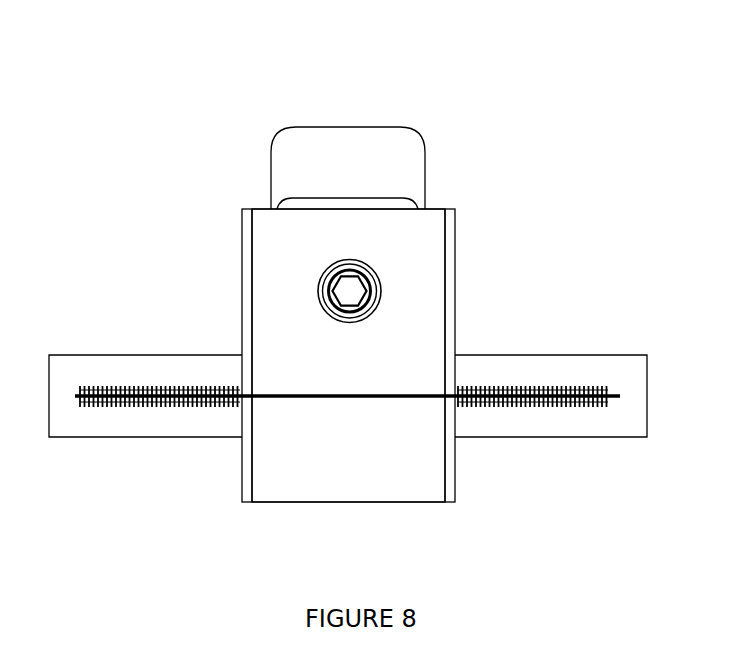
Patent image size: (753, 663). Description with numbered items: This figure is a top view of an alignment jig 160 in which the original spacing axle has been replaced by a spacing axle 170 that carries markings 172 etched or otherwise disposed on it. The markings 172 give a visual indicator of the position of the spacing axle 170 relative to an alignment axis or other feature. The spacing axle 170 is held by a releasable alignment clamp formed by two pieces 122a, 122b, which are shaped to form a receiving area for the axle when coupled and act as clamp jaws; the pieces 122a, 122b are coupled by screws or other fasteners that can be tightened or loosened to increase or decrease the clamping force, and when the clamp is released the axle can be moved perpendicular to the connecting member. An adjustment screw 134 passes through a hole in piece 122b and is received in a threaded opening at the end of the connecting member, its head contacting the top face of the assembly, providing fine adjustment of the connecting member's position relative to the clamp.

The alignment jig 160 is at (197, 125).
The piece 122a is at (425, 460).
The piece 122b is at (248, 248).
The adjustment screw 134 is at (330, 289).
The spacing axle 170 is at (507, 361).
The markings 172 is at (587, 392).